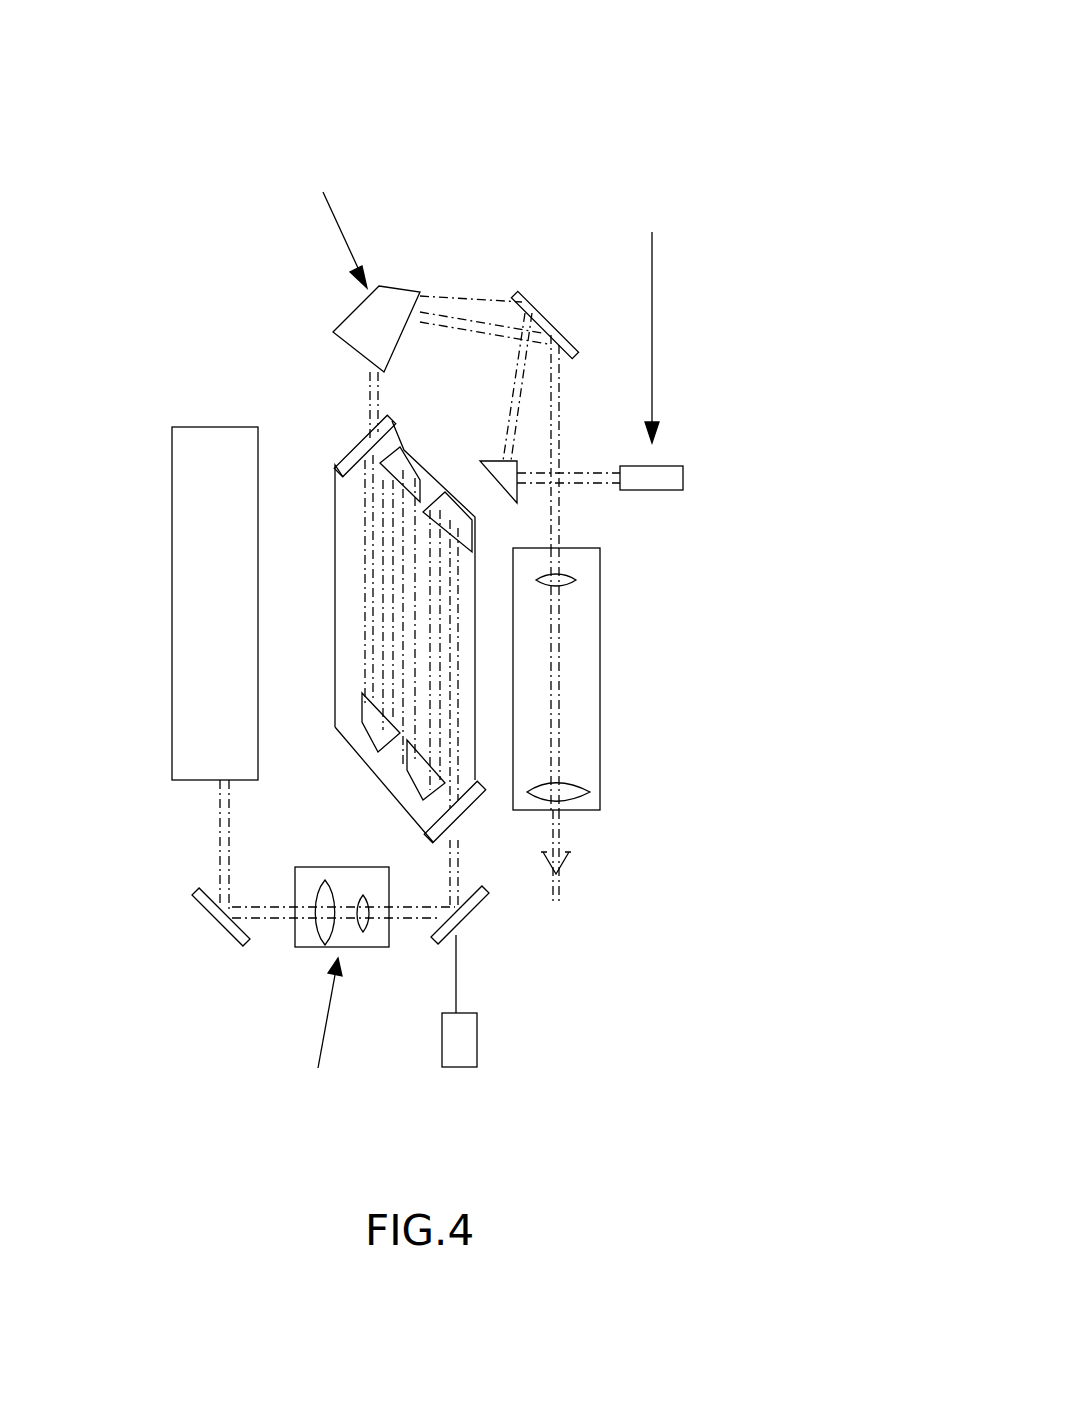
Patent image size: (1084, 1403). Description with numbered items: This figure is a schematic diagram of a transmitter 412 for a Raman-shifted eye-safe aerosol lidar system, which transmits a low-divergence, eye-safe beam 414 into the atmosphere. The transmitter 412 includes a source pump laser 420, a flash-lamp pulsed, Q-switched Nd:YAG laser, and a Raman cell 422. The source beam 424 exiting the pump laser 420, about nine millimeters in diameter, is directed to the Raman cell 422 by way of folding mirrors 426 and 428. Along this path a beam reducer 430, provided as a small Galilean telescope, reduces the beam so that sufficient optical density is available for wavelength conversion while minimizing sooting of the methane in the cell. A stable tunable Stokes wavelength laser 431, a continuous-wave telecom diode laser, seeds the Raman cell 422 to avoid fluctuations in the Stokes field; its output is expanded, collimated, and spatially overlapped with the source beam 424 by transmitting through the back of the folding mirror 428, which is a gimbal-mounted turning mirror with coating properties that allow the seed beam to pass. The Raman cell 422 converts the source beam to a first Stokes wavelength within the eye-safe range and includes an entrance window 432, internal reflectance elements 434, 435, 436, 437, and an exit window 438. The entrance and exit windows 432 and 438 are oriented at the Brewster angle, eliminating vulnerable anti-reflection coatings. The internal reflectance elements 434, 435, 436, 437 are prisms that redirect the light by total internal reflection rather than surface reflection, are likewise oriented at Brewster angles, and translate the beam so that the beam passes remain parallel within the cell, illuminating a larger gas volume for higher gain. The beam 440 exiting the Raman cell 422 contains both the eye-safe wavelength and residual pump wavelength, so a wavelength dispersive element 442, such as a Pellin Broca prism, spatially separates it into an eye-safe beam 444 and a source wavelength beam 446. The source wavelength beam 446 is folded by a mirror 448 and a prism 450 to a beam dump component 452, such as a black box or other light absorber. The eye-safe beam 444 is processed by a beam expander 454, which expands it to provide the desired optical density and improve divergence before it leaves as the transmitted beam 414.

The transmitter 412 is at (518, 110).
The eye-safe beam 414 is at (558, 835).
The source pump laser 420 is at (243, 488).
The Raman cell 422 is at (318, 440).
The source beam 424 is at (218, 822).
The folding mirror 426 is at (222, 940).
The folding mirror 428 is at (470, 912).
The beam reducer 430 is at (368, 947).
The Stokes wavelength laser 431 is at (460, 1067).
The entrance window 432 is at (463, 807).
The internal reflectance element 434 is at (443, 480).
The internal reflectance element 435 is at (420, 778).
The internal reflectance element 436 is at (410, 442).
The internal reflectance element 437 is at (375, 728).
The exit window 438 is at (360, 433).
The beam exiting the Raman cell 440 is at (363, 372).
The wavelength dispersive element 442 is at (395, 297).
The eye-safe beam 444 is at (528, 305).
The source wavelength beam 446 is at (478, 305).
The mirror 448 is at (572, 340).
The prism 450 is at (507, 477).
The beam dump component 452 is at (673, 462).
The beam expander 454 is at (600, 567).